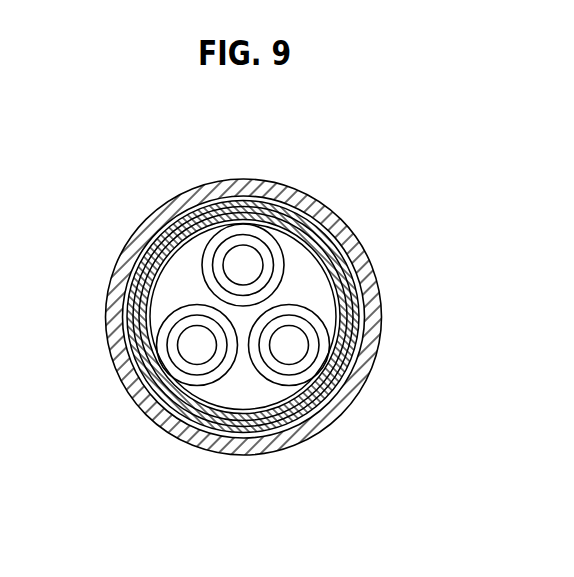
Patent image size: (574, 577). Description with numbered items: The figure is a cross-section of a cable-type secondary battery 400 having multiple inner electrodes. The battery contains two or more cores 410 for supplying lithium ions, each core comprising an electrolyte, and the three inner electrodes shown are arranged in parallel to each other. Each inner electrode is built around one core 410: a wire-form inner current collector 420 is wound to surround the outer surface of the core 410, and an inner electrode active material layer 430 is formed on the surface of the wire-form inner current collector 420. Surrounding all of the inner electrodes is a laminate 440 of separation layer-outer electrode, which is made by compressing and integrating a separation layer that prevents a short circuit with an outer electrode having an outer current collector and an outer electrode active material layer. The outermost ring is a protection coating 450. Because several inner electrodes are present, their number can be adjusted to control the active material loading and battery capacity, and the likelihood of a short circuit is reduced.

The cable-type secondary battery 400 is at (122, 165).
The core for supplying lithium ions 410 is at (238, 253).
The wire-form inner current collector 420 is at (248, 236).
The inner electrode active material layer 430 is at (263, 234).
The laminate of separation layer-outer electrode 440 is at (303, 223).
The protection coating 450 is at (352, 243).